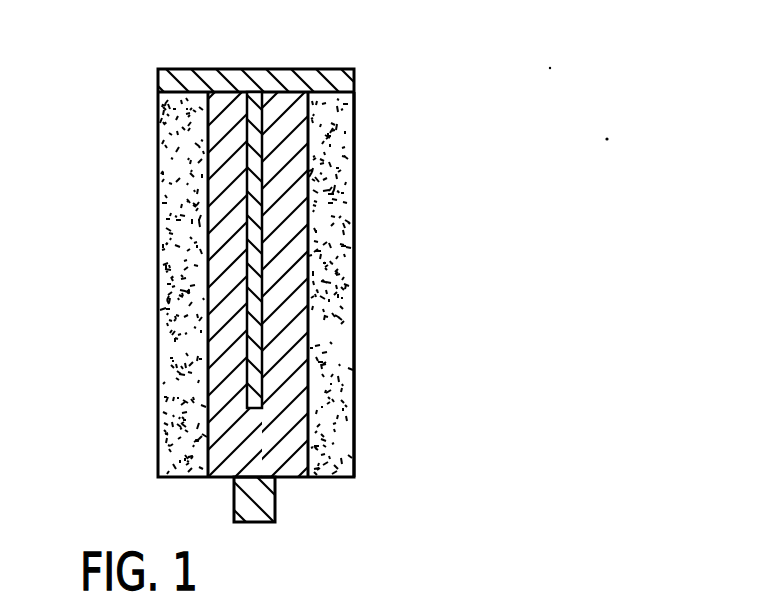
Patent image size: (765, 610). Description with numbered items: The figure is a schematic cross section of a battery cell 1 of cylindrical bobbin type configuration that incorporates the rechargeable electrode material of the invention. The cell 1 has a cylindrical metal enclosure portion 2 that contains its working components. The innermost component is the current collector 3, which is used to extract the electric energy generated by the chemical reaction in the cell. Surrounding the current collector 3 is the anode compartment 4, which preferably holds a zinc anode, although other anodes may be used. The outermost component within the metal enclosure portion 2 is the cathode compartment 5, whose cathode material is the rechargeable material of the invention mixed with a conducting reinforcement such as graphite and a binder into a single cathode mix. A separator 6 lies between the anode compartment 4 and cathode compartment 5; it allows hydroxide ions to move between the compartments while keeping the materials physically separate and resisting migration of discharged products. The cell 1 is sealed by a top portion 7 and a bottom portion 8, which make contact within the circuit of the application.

The battery cell 1 is at (321, 58).
The cylindrical metal enclosure portion 2 is at (355, 310).
The current collector 3 is at (234, 192).
The anode compartment 4 is at (308, 426).
The cathode compartment 5 is at (374, 181).
The separator 6 is at (192, 413).
The top portion 7 is at (193, 68).
The bottom portion 8 is at (263, 498).